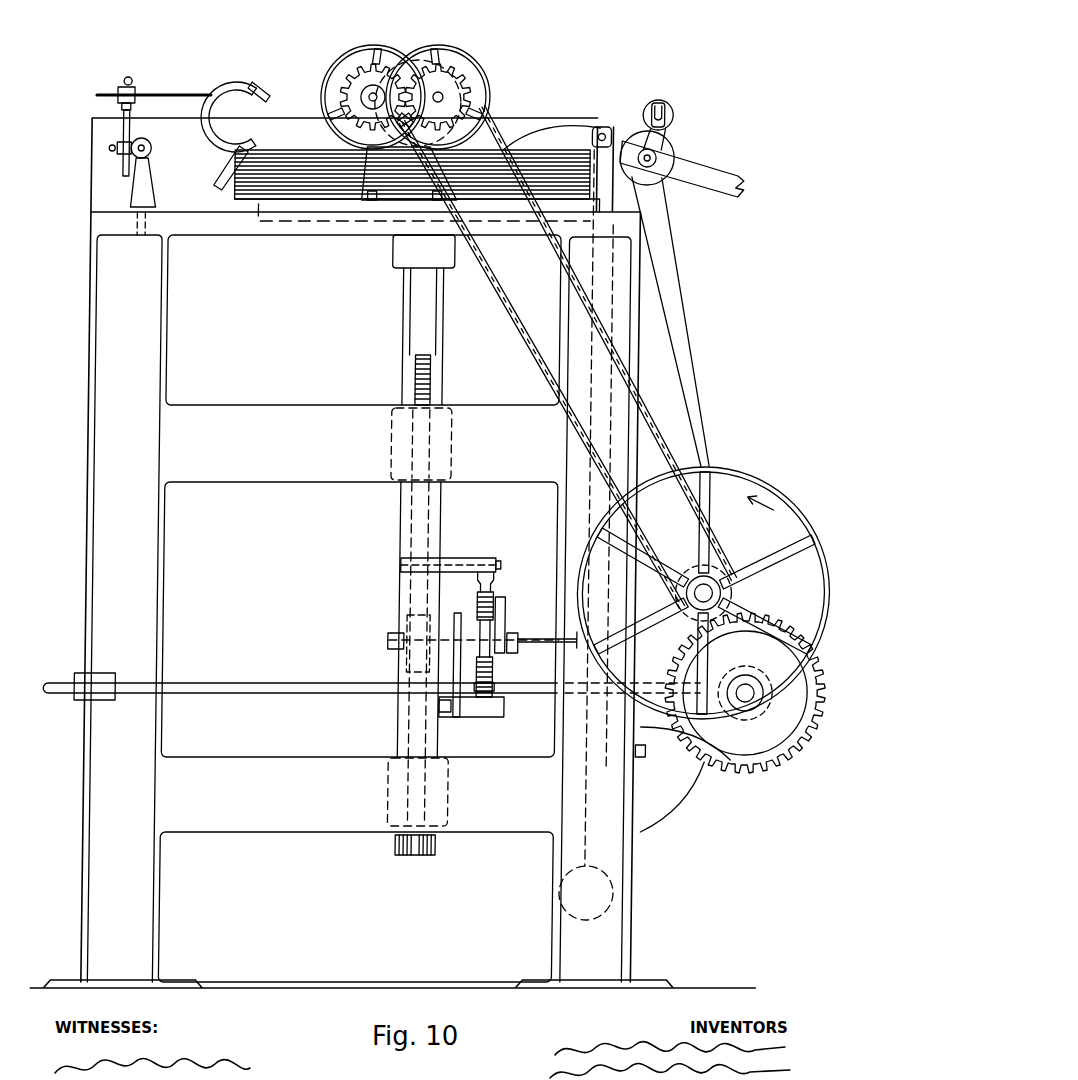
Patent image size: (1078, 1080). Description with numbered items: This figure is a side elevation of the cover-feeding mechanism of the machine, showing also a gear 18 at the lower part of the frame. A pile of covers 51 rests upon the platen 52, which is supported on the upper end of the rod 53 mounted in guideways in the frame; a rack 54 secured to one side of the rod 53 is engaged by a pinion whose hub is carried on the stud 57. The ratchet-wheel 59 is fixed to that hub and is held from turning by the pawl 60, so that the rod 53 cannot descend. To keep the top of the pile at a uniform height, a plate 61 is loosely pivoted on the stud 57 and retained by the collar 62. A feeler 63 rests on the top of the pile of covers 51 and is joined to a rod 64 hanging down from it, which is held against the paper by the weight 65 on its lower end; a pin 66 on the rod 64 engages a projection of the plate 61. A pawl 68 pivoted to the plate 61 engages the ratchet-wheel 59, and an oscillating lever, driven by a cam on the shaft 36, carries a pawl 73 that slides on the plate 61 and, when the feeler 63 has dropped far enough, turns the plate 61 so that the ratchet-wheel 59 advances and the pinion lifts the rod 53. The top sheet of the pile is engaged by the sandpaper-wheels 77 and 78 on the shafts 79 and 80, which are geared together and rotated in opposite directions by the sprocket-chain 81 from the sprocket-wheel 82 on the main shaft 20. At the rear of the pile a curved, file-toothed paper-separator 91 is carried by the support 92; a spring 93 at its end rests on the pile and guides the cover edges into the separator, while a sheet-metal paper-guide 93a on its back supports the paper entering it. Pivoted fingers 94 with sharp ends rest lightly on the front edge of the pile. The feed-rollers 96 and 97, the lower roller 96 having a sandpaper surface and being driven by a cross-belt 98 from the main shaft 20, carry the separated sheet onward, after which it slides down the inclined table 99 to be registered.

The gear 18 is at (763, 748).
The main shaft 20 is at (729, 593).
The shaft 36 is at (271, 690).
The pile of covers 51 is at (267, 159).
The platen 52 is at (286, 213).
The rod 53 is at (401, 318).
The rack 54 is at (422, 370).
The stud 57 is at (389, 641).
The ratchet-wheel 59 is at (496, 673).
The pawl 60 is at (493, 584).
The plate 61 is at (504, 688).
The collar 62 is at (522, 647).
The feeler 63 is at (557, 150).
The rod 64 is at (588, 508).
The weight 65 is at (604, 896).
The pin 66 is at (533, 634).
The pawl 68 is at (485, 630).
The pawl 73 is at (499, 712).
The sandpaper-wheel 77 is at (479, 74).
The sandpaper-wheel 78 is at (349, 50).
The shaft 79 is at (437, 95).
The shaft 80 is at (360, 94).
The sprocket-chain 81 is at (640, 428).
The sprocket-wheel 82 is at (712, 568).
The paper-separator 91 is at (205, 152).
The support 92 is at (144, 94).
The spring 93 is at (208, 148).
The paper-guide 93a is at (197, 135).
The fingers 94 is at (524, 134).
The feed-roller 96 is at (667, 155).
The feed-roller 97 is at (665, 124).
The cross-belt 98 is at (688, 436).
The inclined table 99 is at (734, 188).